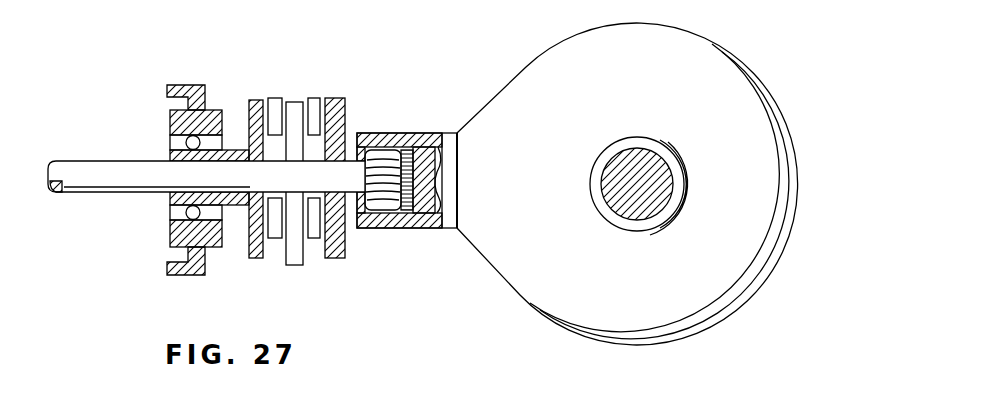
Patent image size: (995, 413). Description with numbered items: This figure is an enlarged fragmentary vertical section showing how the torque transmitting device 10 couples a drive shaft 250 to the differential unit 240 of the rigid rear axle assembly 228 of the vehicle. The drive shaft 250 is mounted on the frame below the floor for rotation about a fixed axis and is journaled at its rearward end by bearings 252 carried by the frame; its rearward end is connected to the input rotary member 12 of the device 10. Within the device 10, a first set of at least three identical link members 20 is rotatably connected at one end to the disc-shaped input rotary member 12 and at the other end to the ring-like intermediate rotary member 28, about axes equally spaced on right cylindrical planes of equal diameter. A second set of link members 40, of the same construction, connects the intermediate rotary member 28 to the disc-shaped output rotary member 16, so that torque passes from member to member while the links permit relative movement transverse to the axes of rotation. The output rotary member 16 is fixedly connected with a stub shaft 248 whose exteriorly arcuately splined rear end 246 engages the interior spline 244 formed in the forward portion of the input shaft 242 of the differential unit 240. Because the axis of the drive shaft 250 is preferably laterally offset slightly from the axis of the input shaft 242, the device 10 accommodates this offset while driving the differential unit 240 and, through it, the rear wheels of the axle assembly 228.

The torque transmitting device 10 is at (300, 159).
The input rotary member 12 is at (250, 99).
The output rotary member 16 is at (335, 258).
The link members 20 is at (279, 99).
The intermediate rotary member 28 is at (296, 100).
The link members 40 is at (316, 99).
The rigid rear axle assembly 228 is at (722, 45).
The differential unit 240 is at (700, 306).
The input shaft 242 is at (445, 166).
The interior spline 244 is at (413, 150).
The exteriorly arcuately splined rear end 246 is at (396, 210).
The stub shaft 248 is at (358, 152).
The drive shaft 250 is at (130, 186).
The bearings 252 is at (170, 128).